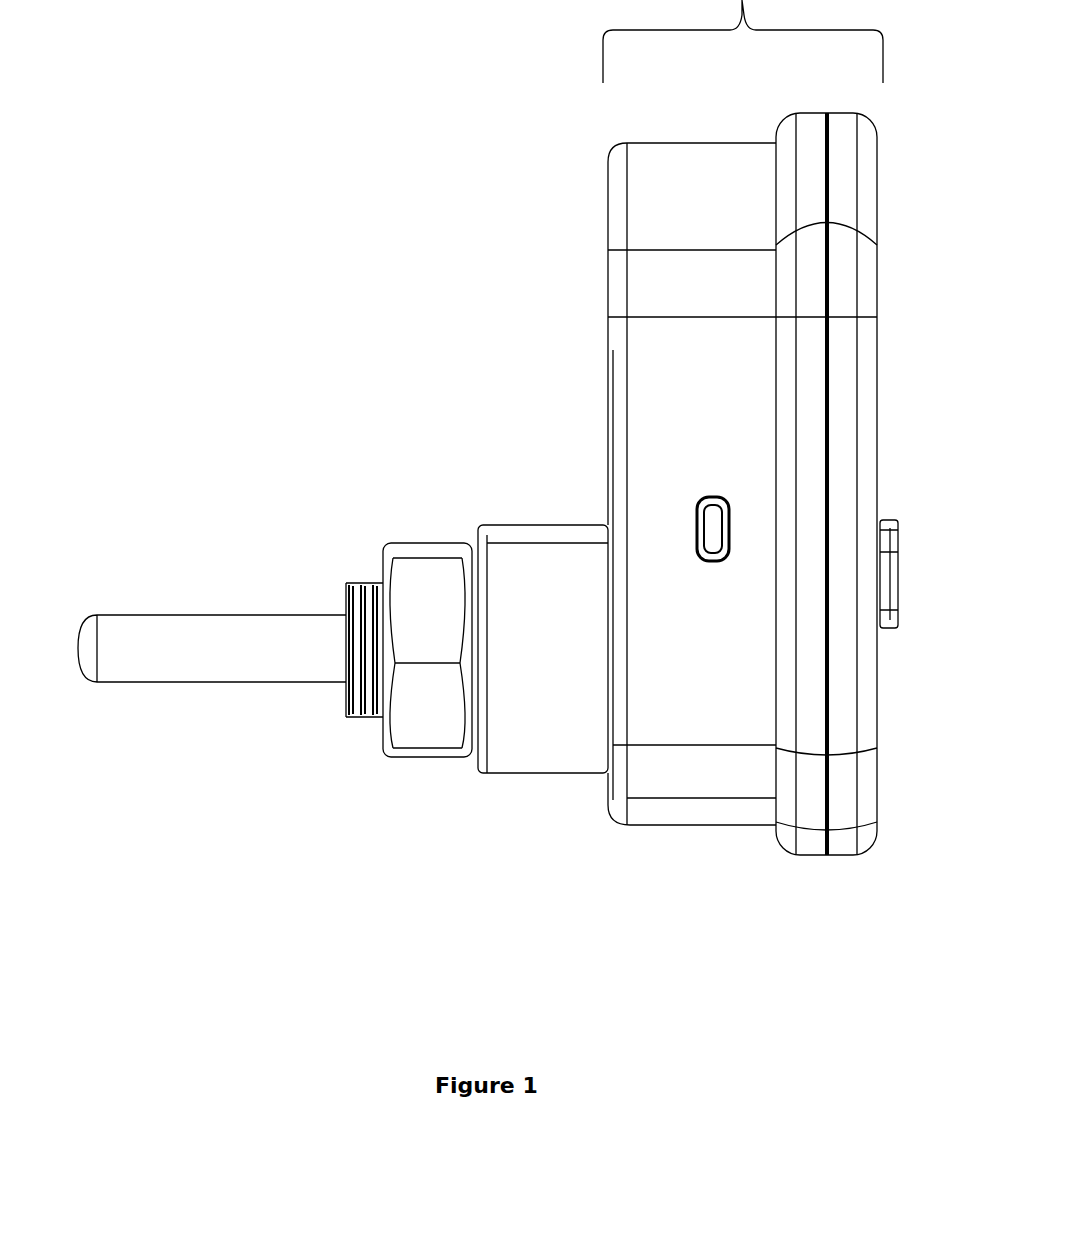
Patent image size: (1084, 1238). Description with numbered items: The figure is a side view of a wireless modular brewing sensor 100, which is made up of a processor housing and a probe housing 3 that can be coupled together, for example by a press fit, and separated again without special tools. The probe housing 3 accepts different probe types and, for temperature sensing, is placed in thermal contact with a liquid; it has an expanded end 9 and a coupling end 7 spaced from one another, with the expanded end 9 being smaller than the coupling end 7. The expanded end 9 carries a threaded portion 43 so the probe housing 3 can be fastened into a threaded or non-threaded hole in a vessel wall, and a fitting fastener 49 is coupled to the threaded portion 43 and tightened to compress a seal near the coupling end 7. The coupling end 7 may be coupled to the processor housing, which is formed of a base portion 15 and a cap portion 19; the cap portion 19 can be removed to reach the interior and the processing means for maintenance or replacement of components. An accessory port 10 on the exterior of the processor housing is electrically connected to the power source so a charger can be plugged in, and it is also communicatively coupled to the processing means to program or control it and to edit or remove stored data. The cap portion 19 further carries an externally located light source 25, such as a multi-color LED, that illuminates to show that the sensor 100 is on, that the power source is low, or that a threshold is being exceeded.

The wireless modular brewing sensor 100 is at (517, 153).
The probe housing 3 is at (597, 504).
The expanded end 9 is at (86, 678).
The threaded portion 43 is at (346, 710).
The fitting fastener 49 is at (420, 748).
The coupling end 7 is at (560, 777).
The accessory port 10 is at (700, 500).
The base portion 15 is at (705, 820).
The cap portion 19 is at (857, 850).
The light source 25 is at (892, 627).